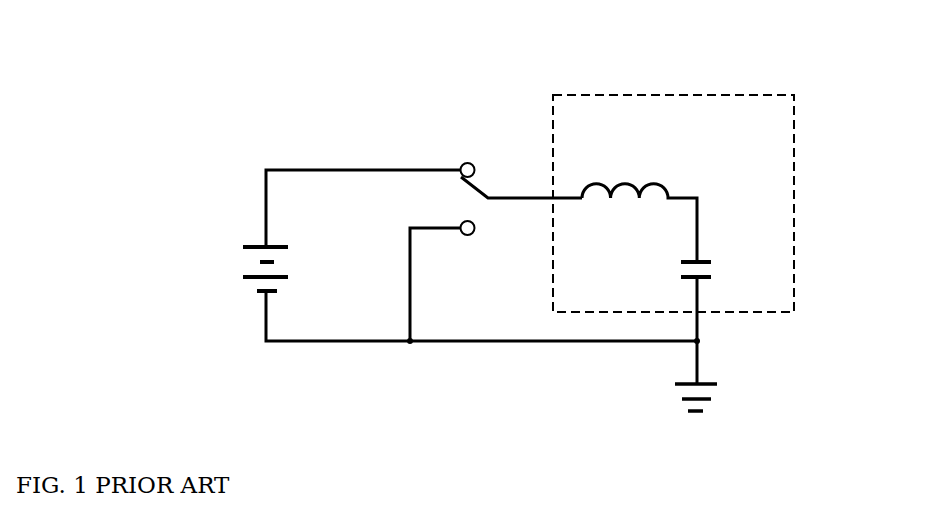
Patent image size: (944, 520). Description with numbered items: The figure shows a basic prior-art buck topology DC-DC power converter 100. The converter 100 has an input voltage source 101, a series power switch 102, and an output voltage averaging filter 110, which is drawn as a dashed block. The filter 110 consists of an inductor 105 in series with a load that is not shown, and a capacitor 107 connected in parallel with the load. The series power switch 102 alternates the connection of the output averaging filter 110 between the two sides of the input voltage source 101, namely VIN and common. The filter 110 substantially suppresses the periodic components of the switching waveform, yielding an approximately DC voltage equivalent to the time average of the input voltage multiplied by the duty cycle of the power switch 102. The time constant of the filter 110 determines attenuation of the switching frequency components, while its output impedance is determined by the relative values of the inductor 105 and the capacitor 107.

The buck topology DC-DC power converter 100 is at (323, 72).
The input voltage source 101 is at (253, 240).
The series power switch 102 is at (492, 180).
The inductor 105 is at (622, 173).
The capacitor 107 is at (722, 270).
The output voltage averaging filter 110 is at (794, 170).